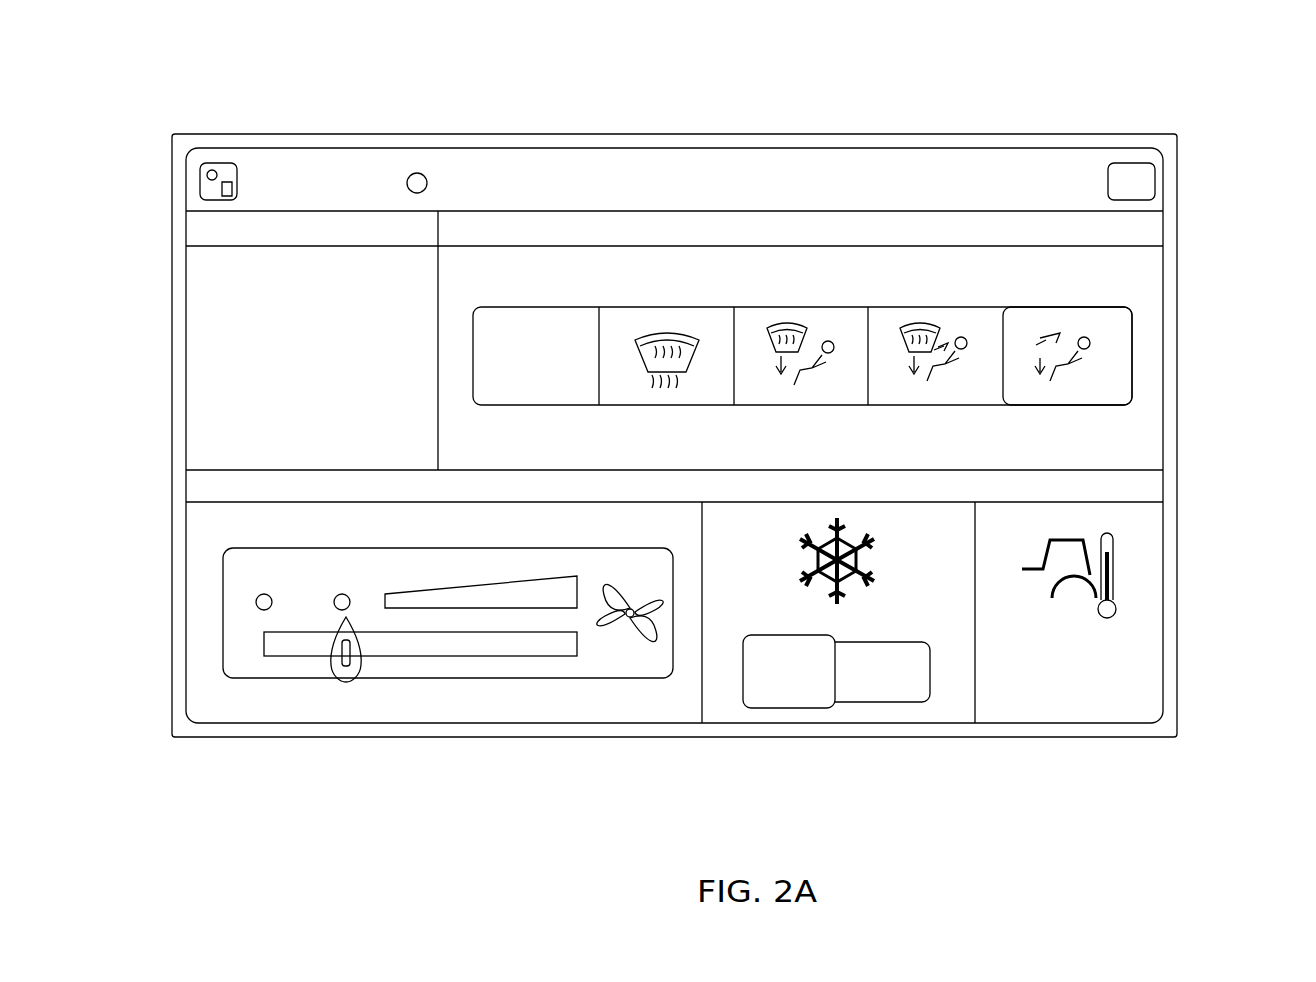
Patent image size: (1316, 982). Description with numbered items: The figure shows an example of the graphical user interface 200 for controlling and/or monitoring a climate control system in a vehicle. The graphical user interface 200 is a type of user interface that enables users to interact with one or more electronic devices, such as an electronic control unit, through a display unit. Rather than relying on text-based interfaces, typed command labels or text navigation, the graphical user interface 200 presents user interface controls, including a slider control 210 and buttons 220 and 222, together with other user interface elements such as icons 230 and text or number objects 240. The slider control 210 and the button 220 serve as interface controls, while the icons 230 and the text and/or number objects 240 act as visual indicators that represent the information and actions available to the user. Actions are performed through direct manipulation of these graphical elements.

The graphical user interface 200 is at (692, 425).
The slider control 210 is at (385, 668).
The button 220 is at (878, 703).
The button 222 is at (1135, 365).
The icons 230 is at (855, 538).
The text or number objects 240 is at (250, 348).